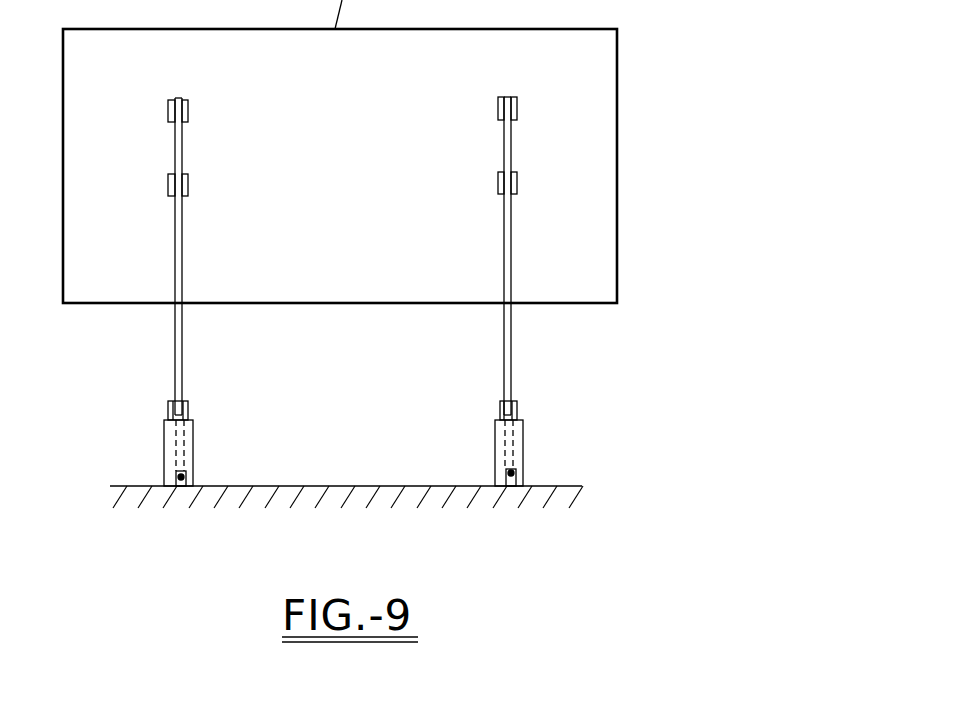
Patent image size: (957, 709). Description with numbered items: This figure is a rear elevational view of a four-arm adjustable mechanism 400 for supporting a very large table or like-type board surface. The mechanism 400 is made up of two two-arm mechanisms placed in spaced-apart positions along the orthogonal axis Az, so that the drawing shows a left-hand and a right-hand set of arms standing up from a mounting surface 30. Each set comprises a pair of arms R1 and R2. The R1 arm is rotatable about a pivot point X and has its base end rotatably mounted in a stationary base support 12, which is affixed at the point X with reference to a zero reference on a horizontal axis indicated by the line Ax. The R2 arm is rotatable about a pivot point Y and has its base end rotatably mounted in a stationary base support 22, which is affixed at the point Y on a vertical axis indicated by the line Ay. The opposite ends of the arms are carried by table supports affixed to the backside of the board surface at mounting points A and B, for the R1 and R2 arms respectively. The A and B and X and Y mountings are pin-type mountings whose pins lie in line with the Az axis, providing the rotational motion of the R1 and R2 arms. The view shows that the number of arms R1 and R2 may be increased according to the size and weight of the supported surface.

The four-arm adjustable mechanism 400 is at (606, 195).
The surface 30 is at (356, 486).
The base support 22 is at (169, 404).
The base support 12 is at (160, 466).
The arm R2 is at (183, 151).
The arm R1 is at (183, 443).
The mounting point B is at (187, 114).
The mounting point A is at (188, 183).
The pivot point X is at (179, 476).
The pivot point Y is at (189, 411).
The horizontal axis Ax is at (184, 477).
The vertical axis Ay is at (181, 486).
The orthogonal axis Az is at (540, 475).